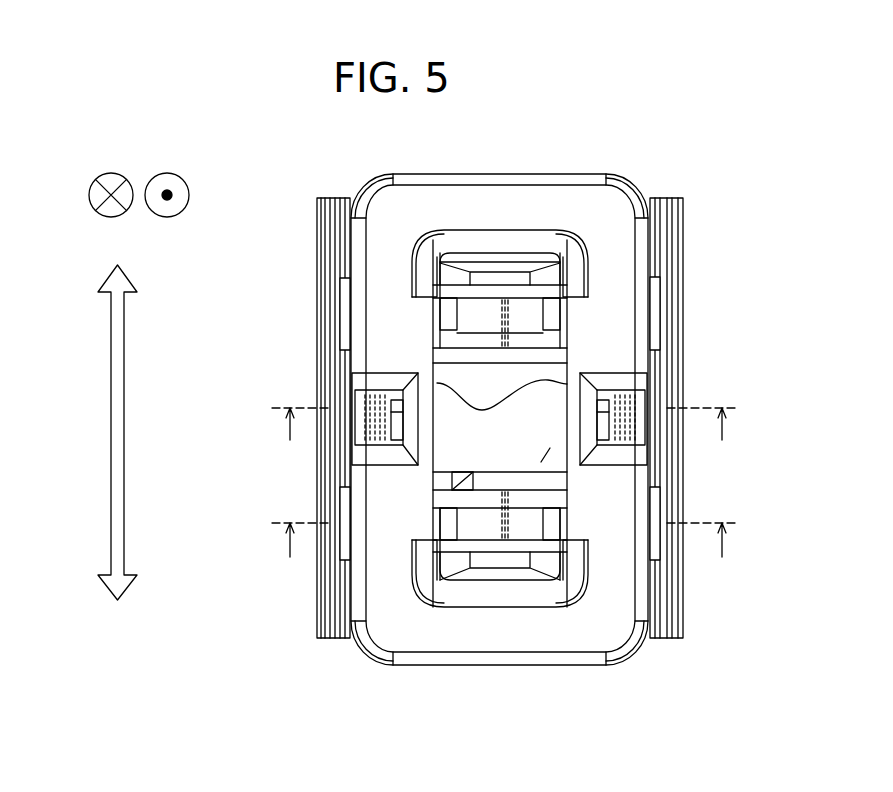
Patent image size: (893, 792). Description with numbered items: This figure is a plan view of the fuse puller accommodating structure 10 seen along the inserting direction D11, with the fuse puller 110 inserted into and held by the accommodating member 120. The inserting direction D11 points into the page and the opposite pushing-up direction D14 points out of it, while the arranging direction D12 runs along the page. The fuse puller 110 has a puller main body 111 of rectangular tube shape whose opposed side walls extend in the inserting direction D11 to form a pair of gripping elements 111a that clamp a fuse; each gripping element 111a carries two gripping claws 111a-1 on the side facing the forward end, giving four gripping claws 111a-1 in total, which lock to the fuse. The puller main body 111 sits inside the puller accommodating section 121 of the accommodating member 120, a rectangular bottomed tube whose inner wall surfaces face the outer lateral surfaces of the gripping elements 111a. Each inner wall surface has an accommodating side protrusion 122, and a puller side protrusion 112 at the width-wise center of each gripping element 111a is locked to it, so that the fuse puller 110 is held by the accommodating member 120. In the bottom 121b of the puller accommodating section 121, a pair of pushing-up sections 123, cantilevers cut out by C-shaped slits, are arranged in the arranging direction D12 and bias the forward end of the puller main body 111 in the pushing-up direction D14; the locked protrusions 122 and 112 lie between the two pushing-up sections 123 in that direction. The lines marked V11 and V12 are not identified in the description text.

The fuse puller accommodating structure 10 is at (372, 142).
The fuse puller 110 is at (575, 172).
The puller main body 111 is at (367, 180).
The gripping elements 111a is at (500, 423).
The gripping claws 111a-1 is at (447, 313).
The puller side protrusions 112 is at (400, 420).
The accommodating member 120 is at (658, 198).
The puller accommodating section 121 is at (683, 199).
The bottom 121b is at (548, 450).
The accommodating side protrusions 122 is at (370, 408).
The pushing-up sections 123 is at (507, 300).
The inserting direction D11 is at (88, 194).
The arranging direction D12 is at (110, 433).
The pushing-up direction D14 is at (182, 179).
The position V11 is at (504, 439).
The position V12 is at (503, 555).